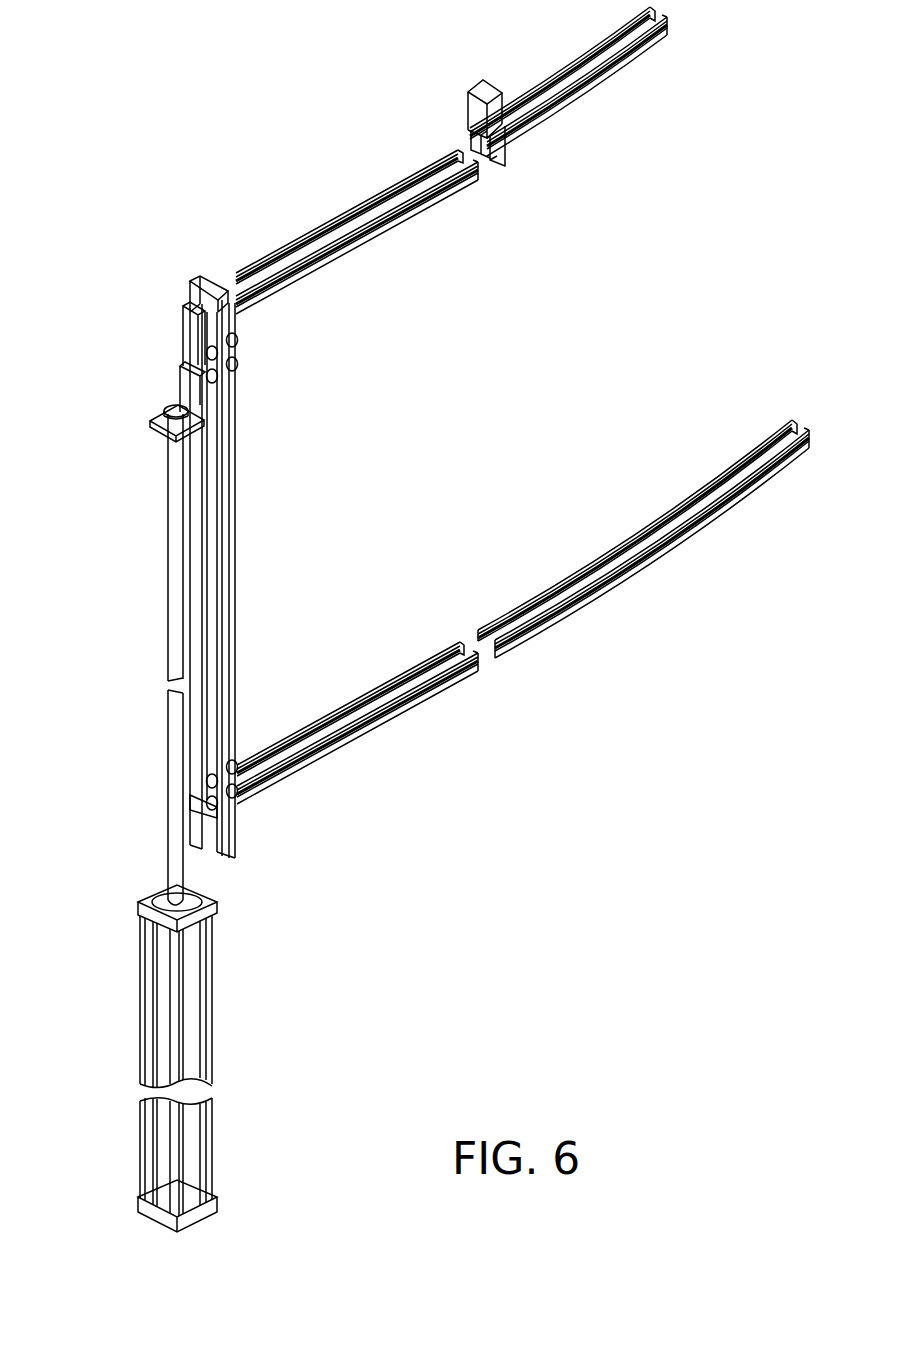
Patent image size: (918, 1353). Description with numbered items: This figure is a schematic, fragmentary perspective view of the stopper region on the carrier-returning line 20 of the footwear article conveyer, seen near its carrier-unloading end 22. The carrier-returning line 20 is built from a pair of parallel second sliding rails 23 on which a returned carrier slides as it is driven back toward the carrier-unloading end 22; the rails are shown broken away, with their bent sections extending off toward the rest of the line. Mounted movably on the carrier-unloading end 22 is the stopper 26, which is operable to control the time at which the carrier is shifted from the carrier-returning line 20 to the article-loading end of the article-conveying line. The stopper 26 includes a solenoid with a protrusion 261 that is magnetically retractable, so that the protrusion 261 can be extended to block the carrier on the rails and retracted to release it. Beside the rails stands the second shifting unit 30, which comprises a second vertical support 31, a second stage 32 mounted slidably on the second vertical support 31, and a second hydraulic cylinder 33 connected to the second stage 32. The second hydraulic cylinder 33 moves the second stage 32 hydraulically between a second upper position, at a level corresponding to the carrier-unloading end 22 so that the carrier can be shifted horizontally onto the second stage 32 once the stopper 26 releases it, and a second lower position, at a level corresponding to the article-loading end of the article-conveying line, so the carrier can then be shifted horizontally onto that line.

The carrier-returning line 20 is at (597, 97).
The carrier-unloading end 22 is at (550, 112).
The second sliding rails 23 is at (632, 43).
The stopper 26 is at (482, 84).
The protrusion 261 is at (488, 158).
The second shifting unit 30 is at (133, 766).
The second vertical support 31 is at (222, 620).
The second stage 32 is at (332, 743).
The second hydraulic cylinder 33 is at (163, 977).